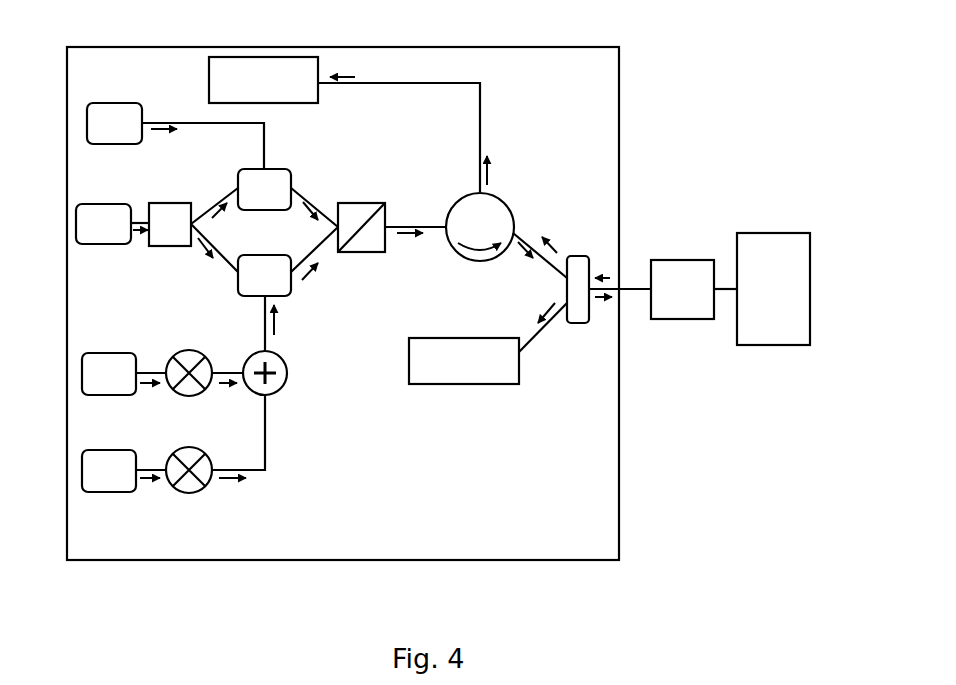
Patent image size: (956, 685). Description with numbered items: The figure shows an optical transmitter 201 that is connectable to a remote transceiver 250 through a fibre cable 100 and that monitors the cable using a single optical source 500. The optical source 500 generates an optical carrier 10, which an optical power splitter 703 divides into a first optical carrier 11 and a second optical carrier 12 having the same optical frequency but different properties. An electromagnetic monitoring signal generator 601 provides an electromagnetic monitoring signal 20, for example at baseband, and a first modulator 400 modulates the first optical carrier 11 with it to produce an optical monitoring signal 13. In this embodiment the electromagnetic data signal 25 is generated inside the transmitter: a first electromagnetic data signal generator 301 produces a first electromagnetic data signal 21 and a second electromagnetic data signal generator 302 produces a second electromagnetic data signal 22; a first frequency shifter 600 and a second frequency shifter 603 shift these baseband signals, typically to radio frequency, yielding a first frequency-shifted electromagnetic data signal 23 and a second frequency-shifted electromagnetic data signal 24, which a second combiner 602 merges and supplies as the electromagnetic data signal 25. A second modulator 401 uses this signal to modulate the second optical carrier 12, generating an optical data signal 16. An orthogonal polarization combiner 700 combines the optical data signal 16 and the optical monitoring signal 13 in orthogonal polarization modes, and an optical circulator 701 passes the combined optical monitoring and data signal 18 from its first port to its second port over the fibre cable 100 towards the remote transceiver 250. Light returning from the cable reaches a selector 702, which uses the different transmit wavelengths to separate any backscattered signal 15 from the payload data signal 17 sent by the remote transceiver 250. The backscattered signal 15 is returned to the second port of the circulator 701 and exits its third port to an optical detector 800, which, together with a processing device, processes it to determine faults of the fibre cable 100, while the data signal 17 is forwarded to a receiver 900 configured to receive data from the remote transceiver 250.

The optical transmitter 201 is at (300, 47).
The optical detector 800 is at (263, 80).
The electromagnetic monitoring signal generator 601 is at (114, 123).
The electromagnetic monitoring signal 20 is at (163, 131).
The optical source 500 is at (103, 224).
The optical carrier 10 is at (140, 235).
The optical power splitter 703 is at (172, 203).
The first optical carrier 11 is at (216, 211).
The second optical carrier 12 is at (207, 250).
The optical monitoring signal 13 is at (311, 210).
The optical data signal 16 is at (310, 278).
The first modulator 400 is at (264, 189).
The second modulator 401 is at (264, 275).
The electromagnetic data signal 25 is at (277, 320).
The orthogonal polarization combiner 700 is at (356, 203).
The optical circulator 701 is at (483, 217).
The backscattered signal 15 is at (553, 247).
The combined optical monitoring and data signal 18 is at (413, 238).
The data signal 17 is at (549, 306).
The selector 702 is at (570, 256).
The receiver 900 is at (464, 361).
The fibre cable 100 is at (682, 289).
The remote transceiver 250 is at (770, 233).
The first electromagnetic data signal generator 301 is at (109, 374).
The second electromagnetic data signal generator 302 is at (109, 471).
The first frequency shifter 600 is at (175, 351).
The second combiner 602 is at (250, 356).
The second frequency shifter 603 is at (175, 449).
The first electromagnetic data signal 21 is at (148, 388).
The first frequency-shifted electromagnetic data signal 23 is at (225, 388).
The second electromagnetic data signal 22 is at (148, 485).
The second frequency-shifted electromagnetic data signal 24 is at (230, 486).